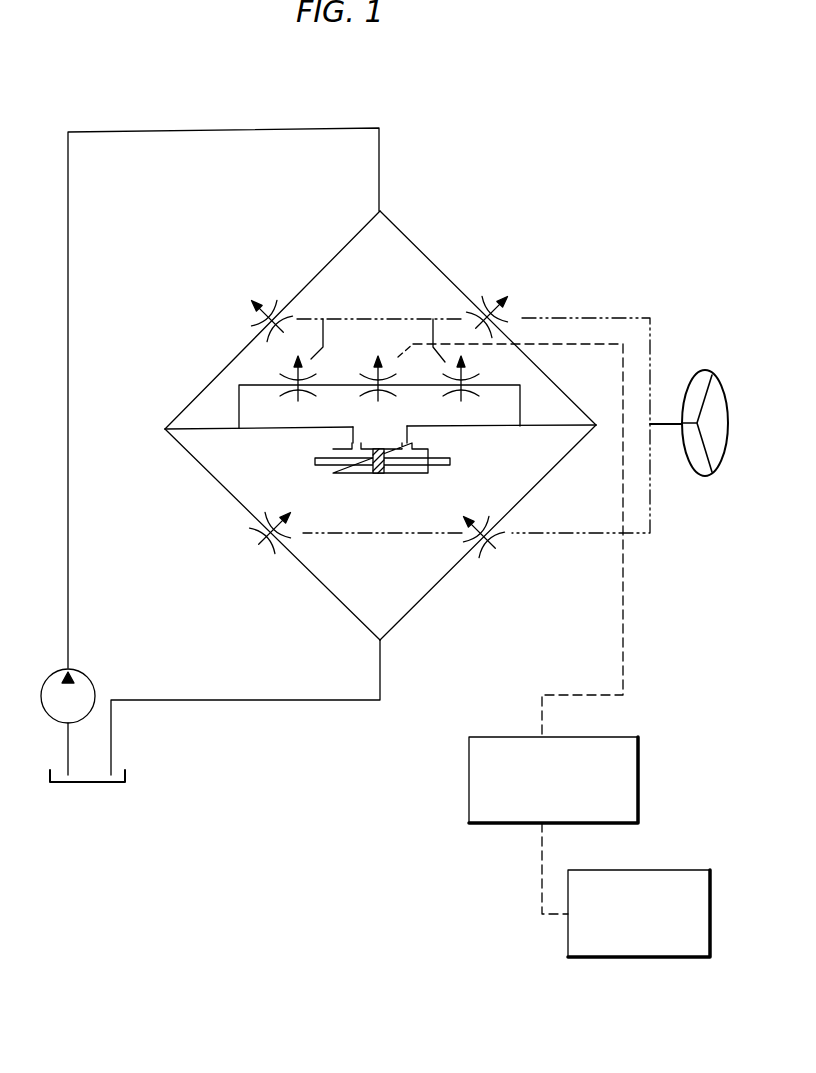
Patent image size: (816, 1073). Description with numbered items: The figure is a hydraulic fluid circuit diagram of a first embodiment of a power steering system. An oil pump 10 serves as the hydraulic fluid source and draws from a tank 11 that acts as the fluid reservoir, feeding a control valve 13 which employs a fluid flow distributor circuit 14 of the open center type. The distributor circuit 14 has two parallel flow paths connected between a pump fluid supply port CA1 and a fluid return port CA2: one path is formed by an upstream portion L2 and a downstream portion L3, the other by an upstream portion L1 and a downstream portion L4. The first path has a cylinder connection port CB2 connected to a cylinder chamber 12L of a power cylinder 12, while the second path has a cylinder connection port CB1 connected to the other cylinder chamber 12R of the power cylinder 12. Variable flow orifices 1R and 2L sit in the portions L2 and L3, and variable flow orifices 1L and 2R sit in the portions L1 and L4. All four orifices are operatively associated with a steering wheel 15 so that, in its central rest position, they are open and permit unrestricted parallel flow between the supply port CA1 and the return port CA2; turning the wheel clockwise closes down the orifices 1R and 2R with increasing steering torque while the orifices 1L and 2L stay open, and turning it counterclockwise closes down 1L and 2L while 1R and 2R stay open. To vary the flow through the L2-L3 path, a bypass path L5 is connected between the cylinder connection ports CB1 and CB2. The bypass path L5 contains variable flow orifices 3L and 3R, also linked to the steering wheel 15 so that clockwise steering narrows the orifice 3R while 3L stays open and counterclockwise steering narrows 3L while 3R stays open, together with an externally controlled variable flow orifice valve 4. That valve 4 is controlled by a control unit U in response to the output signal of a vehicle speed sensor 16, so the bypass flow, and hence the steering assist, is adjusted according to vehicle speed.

The oil pump 10 is at (88, 677).
The tank 11 is at (88, 787).
The power cylinder 12 is at (401, 468).
The cylinder chamber 12L is at (347, 473).
The cylinder chamber 12R is at (418, 473).
The control valve 13 is at (370, 409).
The fluid flow distributor circuit 14 is at (565, 288).
The steering wheel 15 is at (707, 483).
The vehicle speed sensor 16 is at (659, 869).
The variable flow orifice 1R is at (267, 309).
The variable flow orifice 1L is at (502, 304).
The variable flow orifice 2R is at (491, 539).
The variable flow orifice 2L is at (270, 541).
The variable flow orifice 3R is at (301, 372).
The variable flow orifice 3L is at (456, 371).
The externally controlled variable flow orifice valve 4 is at (386, 384).
The upstream portion of flow path L1 is at (430, 261).
The upstream portion of flow path L2 is at (325, 266).
The downstream portion of flow path L3 is at (215, 483).
The downstream portion of flow path L4 is at (444, 577).
The bypass path L5 is at (250, 384).
The pump fluid supply port CA1 is at (383, 208).
The fluid return port CA2 is at (382, 642).
The cylinder connection port CB1 is at (596, 427).
The cylinder connection port CB2 is at (164, 431).
The control unit U is at (469, 796).